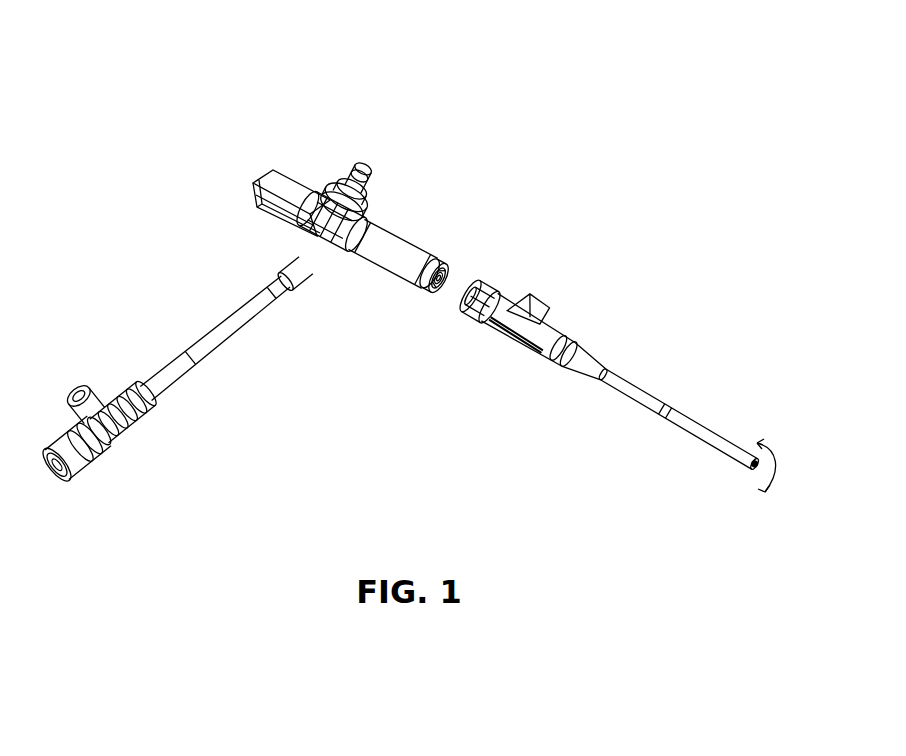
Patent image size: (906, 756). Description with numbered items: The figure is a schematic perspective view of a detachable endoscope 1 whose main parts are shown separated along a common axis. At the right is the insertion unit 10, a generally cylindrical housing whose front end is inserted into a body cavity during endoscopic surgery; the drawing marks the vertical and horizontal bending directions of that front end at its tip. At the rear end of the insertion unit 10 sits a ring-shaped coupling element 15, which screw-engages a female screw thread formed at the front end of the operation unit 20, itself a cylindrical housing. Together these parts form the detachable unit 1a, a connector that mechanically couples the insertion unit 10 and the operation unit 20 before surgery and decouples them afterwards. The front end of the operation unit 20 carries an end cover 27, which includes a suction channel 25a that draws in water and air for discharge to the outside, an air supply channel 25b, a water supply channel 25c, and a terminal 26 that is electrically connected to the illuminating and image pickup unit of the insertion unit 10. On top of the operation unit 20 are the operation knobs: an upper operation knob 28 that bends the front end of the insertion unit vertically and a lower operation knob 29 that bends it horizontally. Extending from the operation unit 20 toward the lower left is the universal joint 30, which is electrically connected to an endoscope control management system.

The detachable endoscope 1 is at (458, 100).
The detachable unit 1a is at (496, 228).
The insertion unit 10 is at (631, 380).
The ring-shaped coupling element 15 is at (488, 279).
The operation unit 20 is at (402, 226).
The suction channel 25a is at (446, 300).
The air supply channel 25b is at (440, 299).
The water supply channel 25c is at (471, 264).
The terminal 26 is at (453, 260).
The end cover 27 is at (430, 291).
The upper operation knob 28 is at (363, 179).
The lower operation knob 29 is at (311, 186).
The universal joint 30 is at (169, 374).